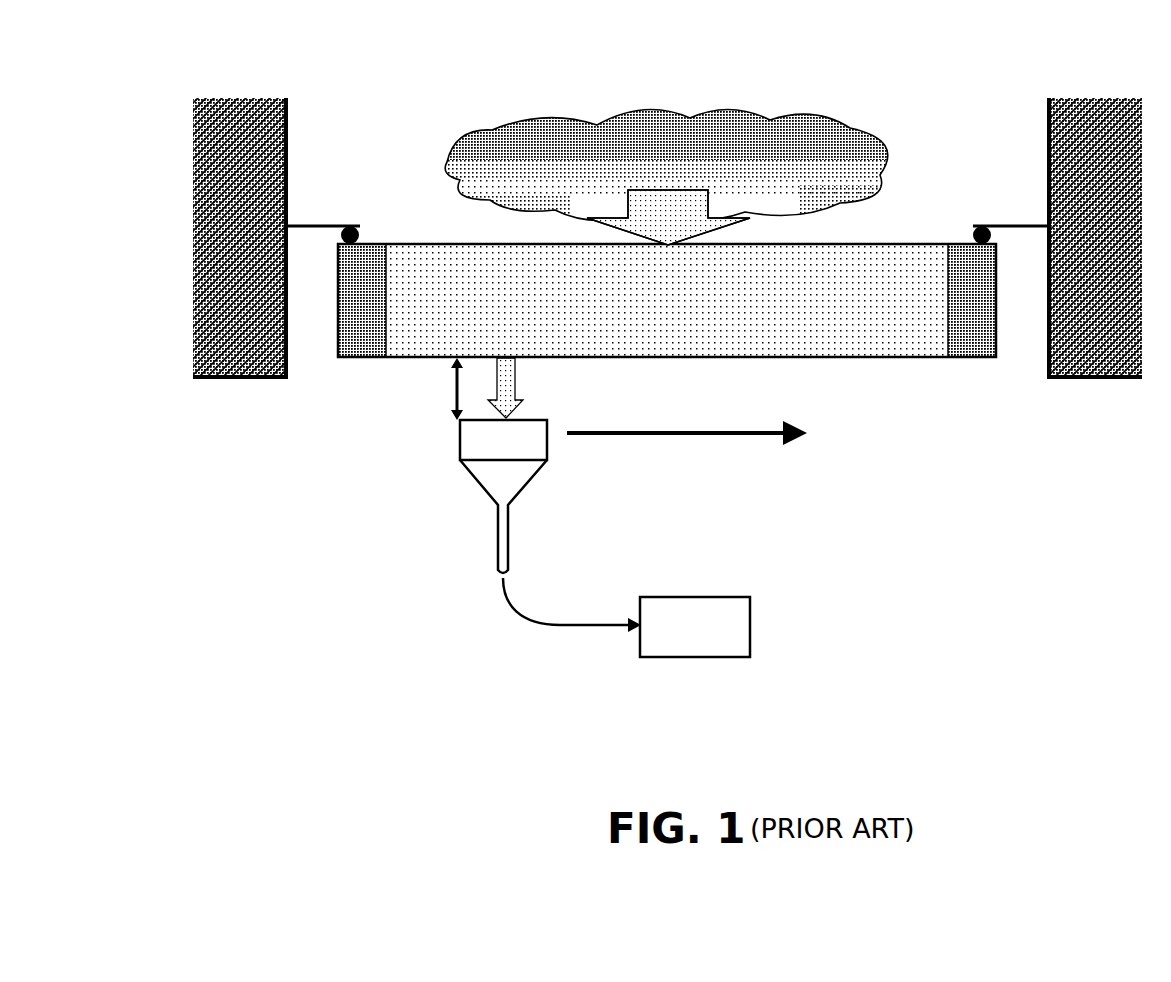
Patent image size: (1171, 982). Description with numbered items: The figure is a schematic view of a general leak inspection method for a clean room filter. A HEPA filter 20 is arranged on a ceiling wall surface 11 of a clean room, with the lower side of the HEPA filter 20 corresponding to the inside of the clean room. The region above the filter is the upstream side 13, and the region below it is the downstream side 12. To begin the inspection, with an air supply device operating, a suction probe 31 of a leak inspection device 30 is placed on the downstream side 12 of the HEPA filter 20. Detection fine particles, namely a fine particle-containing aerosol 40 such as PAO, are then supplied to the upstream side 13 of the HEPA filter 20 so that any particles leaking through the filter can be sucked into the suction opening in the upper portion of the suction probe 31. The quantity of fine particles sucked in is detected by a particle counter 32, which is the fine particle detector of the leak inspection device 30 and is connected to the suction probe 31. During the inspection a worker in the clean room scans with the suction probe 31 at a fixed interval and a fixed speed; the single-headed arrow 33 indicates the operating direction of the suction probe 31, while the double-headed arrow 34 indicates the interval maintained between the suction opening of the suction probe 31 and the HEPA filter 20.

The ceiling wall surface 11 is at (235, 382).
The downstream side 12 is at (420, 512).
The upstream side 13 is at (400, 122).
The HEPA filter 20 is at (797, 303).
The leak inspection device 30 is at (603, 645).
The suction probe 31 is at (518, 442).
The particle counter 32 is at (752, 625).
The single-headed arrow 33 is at (718, 440).
The double-headed arrow 34 is at (450, 392).
The fine particle-containing aerosol 40 is at (700, 160).